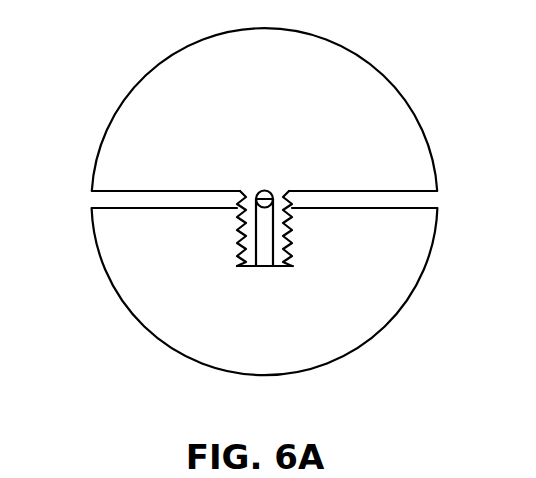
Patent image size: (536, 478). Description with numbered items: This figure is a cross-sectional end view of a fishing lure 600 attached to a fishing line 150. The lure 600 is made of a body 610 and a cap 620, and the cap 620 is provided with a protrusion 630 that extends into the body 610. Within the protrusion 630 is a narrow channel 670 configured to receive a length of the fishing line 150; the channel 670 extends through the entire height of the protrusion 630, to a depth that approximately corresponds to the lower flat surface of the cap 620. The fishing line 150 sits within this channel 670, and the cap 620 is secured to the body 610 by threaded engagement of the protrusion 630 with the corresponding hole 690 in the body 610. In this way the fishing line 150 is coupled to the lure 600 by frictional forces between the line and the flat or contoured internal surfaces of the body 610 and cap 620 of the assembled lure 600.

The fishing lure 600 is at (122, 32).
The fishing line 150 is at (264, 190).
The body 610 is at (398, 255).
The cap 620 is at (376, 100).
The protrusion 630 is at (250, 243).
The channel 670 is at (273, 258).
The hole 690 is at (250, 266).